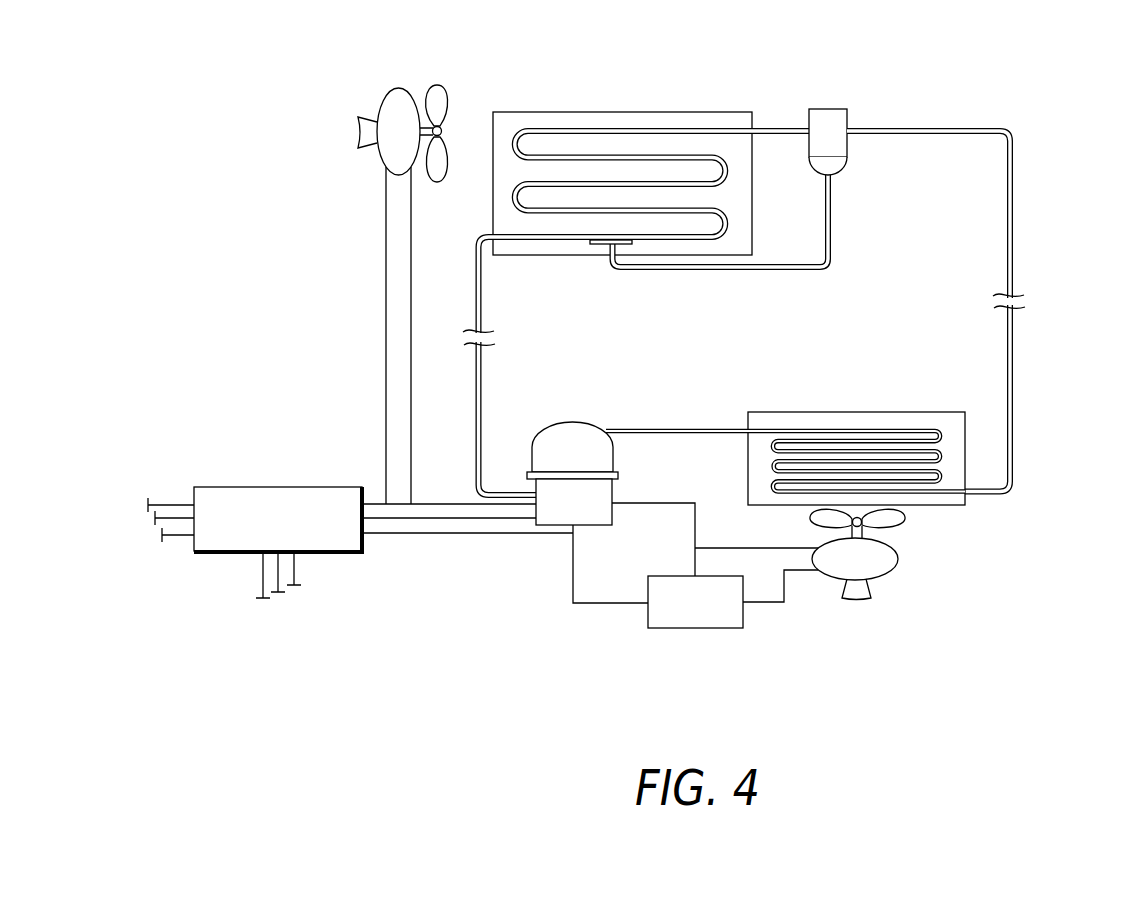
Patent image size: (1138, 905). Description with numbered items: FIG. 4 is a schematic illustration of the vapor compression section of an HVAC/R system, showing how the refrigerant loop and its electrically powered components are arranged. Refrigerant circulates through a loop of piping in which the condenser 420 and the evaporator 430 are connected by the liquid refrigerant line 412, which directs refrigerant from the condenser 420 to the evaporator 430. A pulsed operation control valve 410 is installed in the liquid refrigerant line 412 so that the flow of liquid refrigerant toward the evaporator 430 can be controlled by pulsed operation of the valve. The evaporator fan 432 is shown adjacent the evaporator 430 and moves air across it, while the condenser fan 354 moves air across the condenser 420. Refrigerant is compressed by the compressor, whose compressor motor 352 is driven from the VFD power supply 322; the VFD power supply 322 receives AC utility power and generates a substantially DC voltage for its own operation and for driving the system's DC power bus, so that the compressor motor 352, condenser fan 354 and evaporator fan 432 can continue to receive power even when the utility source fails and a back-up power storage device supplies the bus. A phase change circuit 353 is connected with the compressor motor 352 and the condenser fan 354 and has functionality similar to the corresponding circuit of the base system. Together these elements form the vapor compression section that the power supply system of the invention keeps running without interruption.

The VFD power supply 322 is at (277, 487).
The compressor motor 352 is at (613, 495).
The phase change circuit 353 is at (695, 630).
The condenser fan 354 is at (900, 552).
The pulsed operation control valve 410 is at (826, 109).
The liquid refrigerant line 412 is at (1013, 205).
The condenser 420 is at (858, 412).
The evaporator 430 is at (551, 112).
The evaporator fan 432 is at (398, 87).